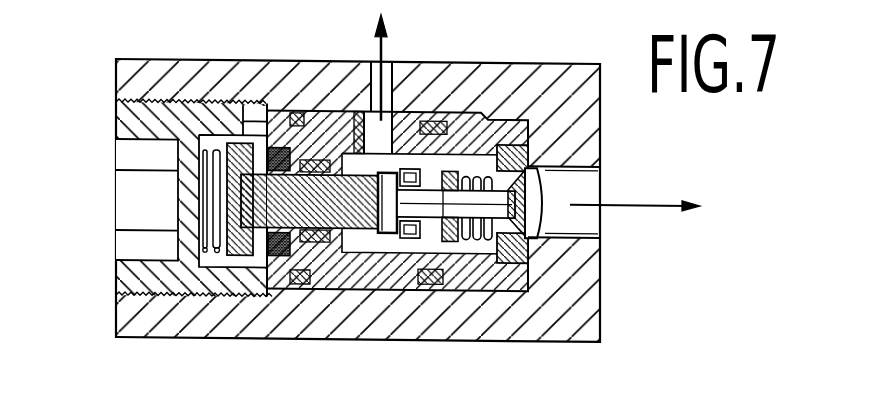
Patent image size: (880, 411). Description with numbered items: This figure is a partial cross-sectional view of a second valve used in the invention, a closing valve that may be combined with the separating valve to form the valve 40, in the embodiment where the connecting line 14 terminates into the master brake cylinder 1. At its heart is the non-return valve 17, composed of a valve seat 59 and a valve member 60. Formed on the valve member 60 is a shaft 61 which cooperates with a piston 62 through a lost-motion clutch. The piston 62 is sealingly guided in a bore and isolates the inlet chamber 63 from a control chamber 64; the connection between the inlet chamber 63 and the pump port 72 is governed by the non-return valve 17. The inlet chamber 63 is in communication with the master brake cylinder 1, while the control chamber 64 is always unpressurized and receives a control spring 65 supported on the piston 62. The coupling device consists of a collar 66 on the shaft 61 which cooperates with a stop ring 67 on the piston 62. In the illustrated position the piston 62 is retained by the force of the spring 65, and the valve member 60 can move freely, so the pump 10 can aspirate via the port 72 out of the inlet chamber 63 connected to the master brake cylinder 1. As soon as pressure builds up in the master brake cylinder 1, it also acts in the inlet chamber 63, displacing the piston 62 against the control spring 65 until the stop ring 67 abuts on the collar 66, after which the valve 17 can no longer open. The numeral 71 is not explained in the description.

The master brake cylinder 1 is at (386, 60).
The pump 10 is at (652, 208).
The connecting line 14 is at (397, 62).
The non-return valve 17 is at (538, 145).
The valve 40 is at (386, 199).
The valve seat 59 is at (530, 249).
The valve member 60 is at (543, 212).
The shaft 61 is at (450, 195).
The piston 62 is at (294, 222).
The inlet chamber 63 is at (458, 218).
The control chamber 64 is at (210, 262).
The control spring 65 is at (237, 258).
The collar 66 is at (387, 230).
The stop ring 67 is at (418, 222).
The return spring 71 is at (487, 223).
The pump port 72 is at (590, 182).